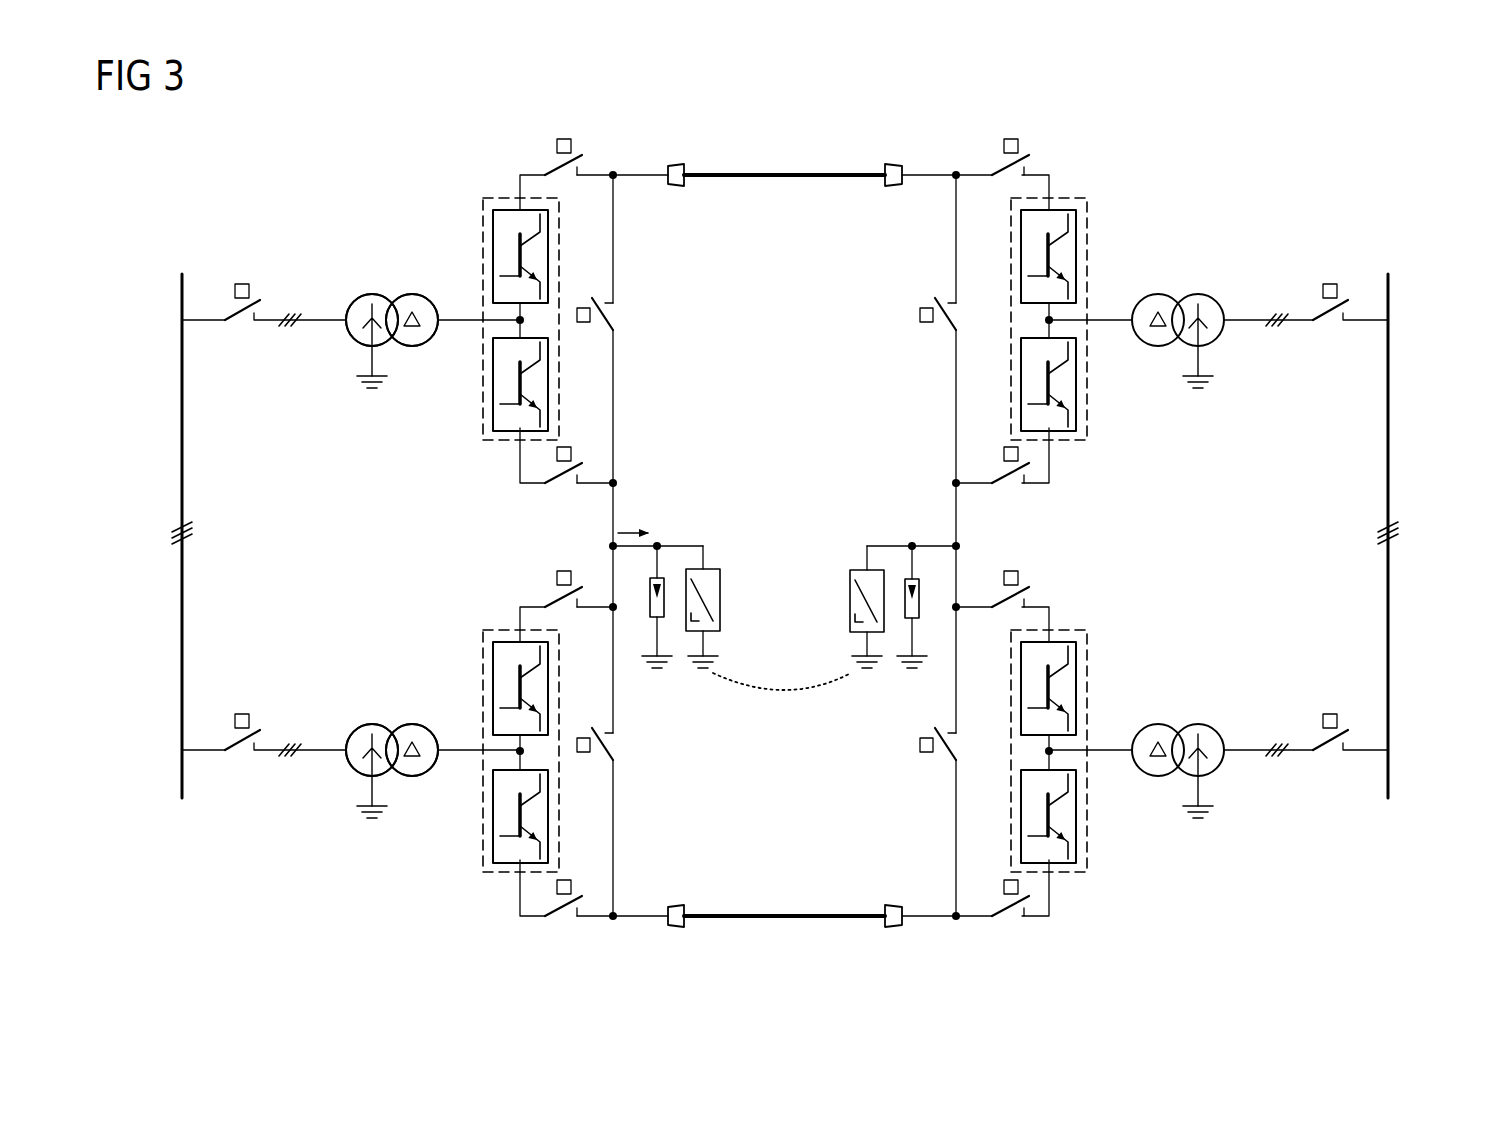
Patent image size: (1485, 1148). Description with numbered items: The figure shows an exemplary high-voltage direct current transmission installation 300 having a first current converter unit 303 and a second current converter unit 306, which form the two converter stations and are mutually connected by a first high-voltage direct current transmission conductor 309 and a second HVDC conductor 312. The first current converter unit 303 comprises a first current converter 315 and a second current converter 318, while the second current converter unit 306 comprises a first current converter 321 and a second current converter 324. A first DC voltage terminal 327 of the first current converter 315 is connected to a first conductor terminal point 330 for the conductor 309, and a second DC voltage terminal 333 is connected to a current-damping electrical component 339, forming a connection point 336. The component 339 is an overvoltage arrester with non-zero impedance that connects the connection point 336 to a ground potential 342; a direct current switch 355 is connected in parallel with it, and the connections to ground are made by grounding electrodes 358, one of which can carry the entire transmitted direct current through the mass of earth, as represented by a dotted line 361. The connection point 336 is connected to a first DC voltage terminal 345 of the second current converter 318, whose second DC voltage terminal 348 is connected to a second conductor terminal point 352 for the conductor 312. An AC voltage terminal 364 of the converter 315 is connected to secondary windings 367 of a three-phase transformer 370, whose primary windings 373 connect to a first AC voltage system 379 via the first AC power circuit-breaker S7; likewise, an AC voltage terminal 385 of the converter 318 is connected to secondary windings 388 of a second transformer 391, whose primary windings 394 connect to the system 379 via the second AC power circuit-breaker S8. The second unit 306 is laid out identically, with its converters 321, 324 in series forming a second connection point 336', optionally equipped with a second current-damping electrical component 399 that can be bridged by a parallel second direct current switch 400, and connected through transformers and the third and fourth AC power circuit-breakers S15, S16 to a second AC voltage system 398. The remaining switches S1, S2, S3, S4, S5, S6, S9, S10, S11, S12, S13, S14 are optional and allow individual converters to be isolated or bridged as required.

The high-voltage direct current transmission installation 300 is at (1315, 135).
The first current converter unit 303 is at (508, 152).
The second current converter unit 306 is at (1043, 148).
The first high-voltage direct current transmission conductor 309 is at (790, 173).
The second high-voltage direct current transmission conductor 312 is at (790, 913).
The first current converter 315 is at (483, 220).
The second current converter 318 is at (483, 650).
The first current converter 321 is at (1088, 220).
The second current converter 324 is at (1088, 645).
The first DC voltage terminal 327 is at (520, 183).
The first conductor terminal point 330 is at (678, 163).
The second DC voltage terminal 333 is at (520, 472).
The connection point 336 is at (614, 539).
The second connection point 336' is at (958, 537).
The current-damping electrical component 339 is at (657, 578).
The ground potential 342 is at (657, 672).
The first DC voltage terminal 345 is at (520, 612).
The second DC voltage terminal 348 is at (520, 905).
The second conductor terminal point 352 is at (678, 903).
The direct current switch 355 is at (703, 568).
The grounding electrode 358 is at (703, 643).
The dotted line 361 is at (786, 690).
The AC voltage terminal 364 is at (456, 318).
The secondary windings 367 is at (408, 345).
The three-phase transformer 370 is at (380, 308).
The primary windings 373 is at (358, 345).
The first AC voltage system 379 is at (182, 395).
The AC voltage terminal 385 is at (456, 749).
The secondary windings 388 is at (408, 775).
The second transformer 391 is at (380, 738).
The primary windings 394 is at (358, 775).
The second AC voltage system 398 is at (1388, 395).
The second current-damping electrical component 399 is at (912, 578).
The second direct current switch 400 is at (866, 569).
The optional switch S1 is at (578, 180).
The optional switch S2 is at (555, 490).
The optional switch S3 is at (578, 612).
The optional switch S4 is at (556, 920).
The optional switch S5 is at (614, 330).
The optional switch S6 is at (600, 765).
The first AC power circuit-breaker S7 is at (247, 332).
The second AC power circuit-breaker S8 is at (247, 762).
The optional switch S9 is at (997, 163).
The optional switch S10 is at (1017, 490).
The optional switch S11 is at (1000, 612).
The optional switch S12 is at (1017, 920).
The optional switch S13 is at (944, 335).
The optional switch S14 is at (944, 765).
The third AC power circuit-breaker S15 is at (1335, 332).
The fourth AC power circuit-breaker S16 is at (1335, 762).